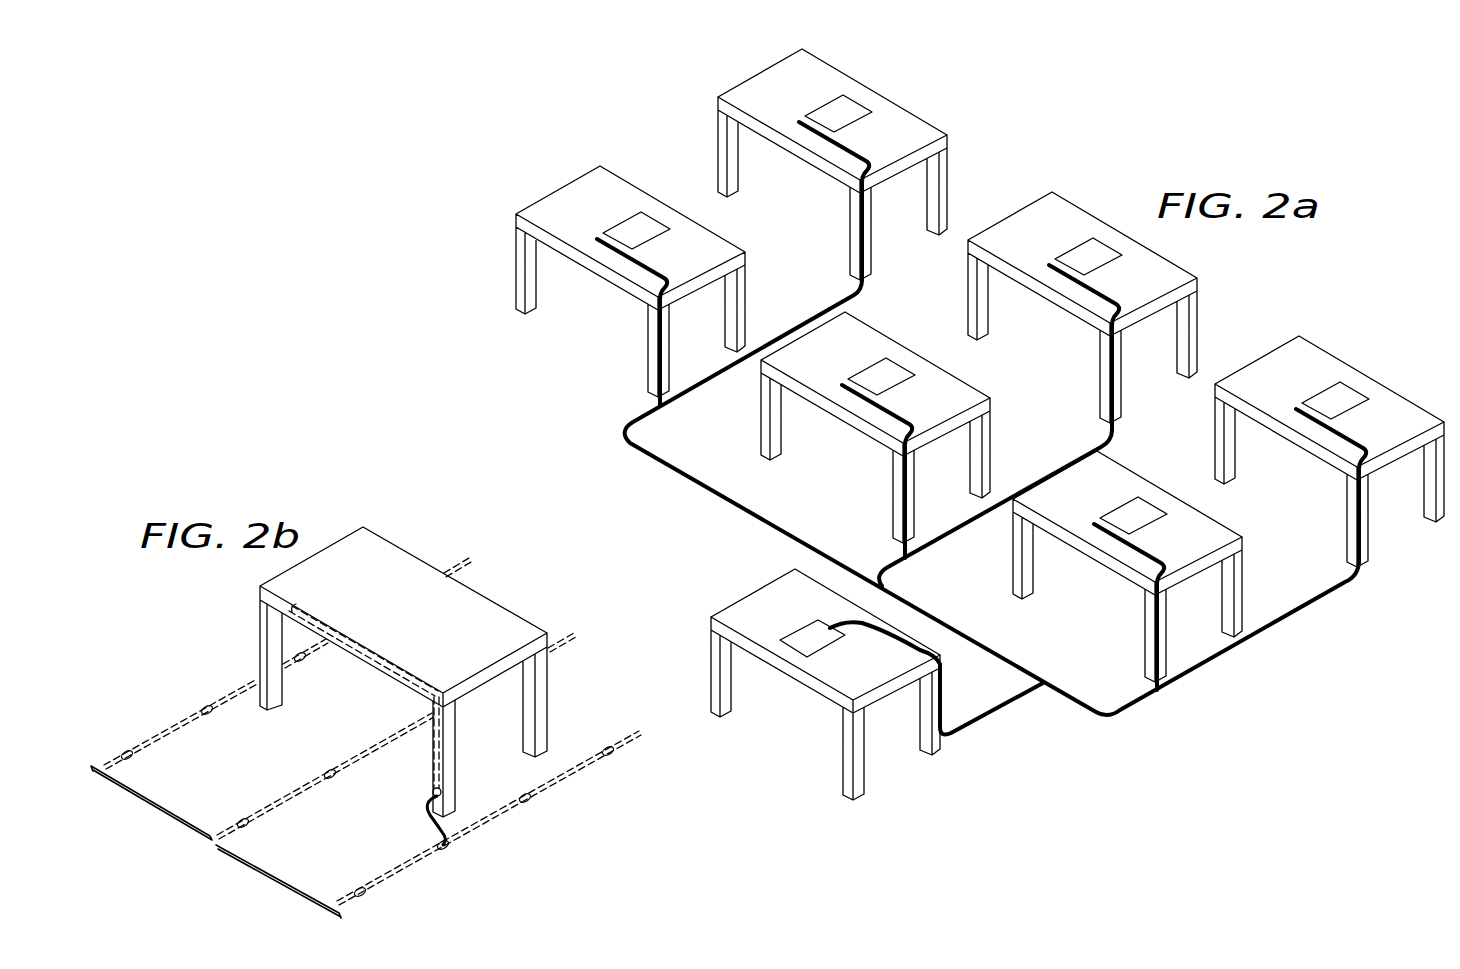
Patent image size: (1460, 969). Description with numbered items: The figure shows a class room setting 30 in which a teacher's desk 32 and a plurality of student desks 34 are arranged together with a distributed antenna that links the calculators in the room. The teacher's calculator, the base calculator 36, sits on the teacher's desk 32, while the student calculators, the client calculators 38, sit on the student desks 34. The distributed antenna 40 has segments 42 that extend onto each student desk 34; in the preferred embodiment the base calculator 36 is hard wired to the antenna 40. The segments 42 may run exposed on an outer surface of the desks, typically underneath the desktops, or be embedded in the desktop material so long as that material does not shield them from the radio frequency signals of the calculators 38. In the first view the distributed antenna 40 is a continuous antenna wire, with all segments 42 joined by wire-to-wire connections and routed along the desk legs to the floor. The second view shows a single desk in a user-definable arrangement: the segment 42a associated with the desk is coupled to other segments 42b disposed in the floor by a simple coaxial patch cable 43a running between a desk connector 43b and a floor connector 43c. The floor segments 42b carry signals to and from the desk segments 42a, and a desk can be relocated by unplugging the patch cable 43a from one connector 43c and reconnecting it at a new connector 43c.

In FIG. 2a, the class room setting 30 is at (599, 102).
In FIG. 2a, the teacher's desk 32 is at (732, 603).
In FIG. 2a, the student desks 34 is at (543, 203).
In FIG. 2a, the base calculator 36 is at (808, 630).
In FIG. 2a, the client calculators 38 is at (618, 228).
In FIG. 2a, the distributed antenna 40 is at (1012, 723).
In FIG. 2a, the antenna segments 42 is at (668, 273).
In FIG. 2b, the desk segment 42a is at (405, 678).
In FIG. 2b, the floor segments 42b is at (160, 738).
In FIG. 2b, the coaxial patch cable 43a is at (425, 808).
In FIG. 2b, the connector 43b is at (433, 788).
In FIG. 2b, the connector 43c is at (126, 751).